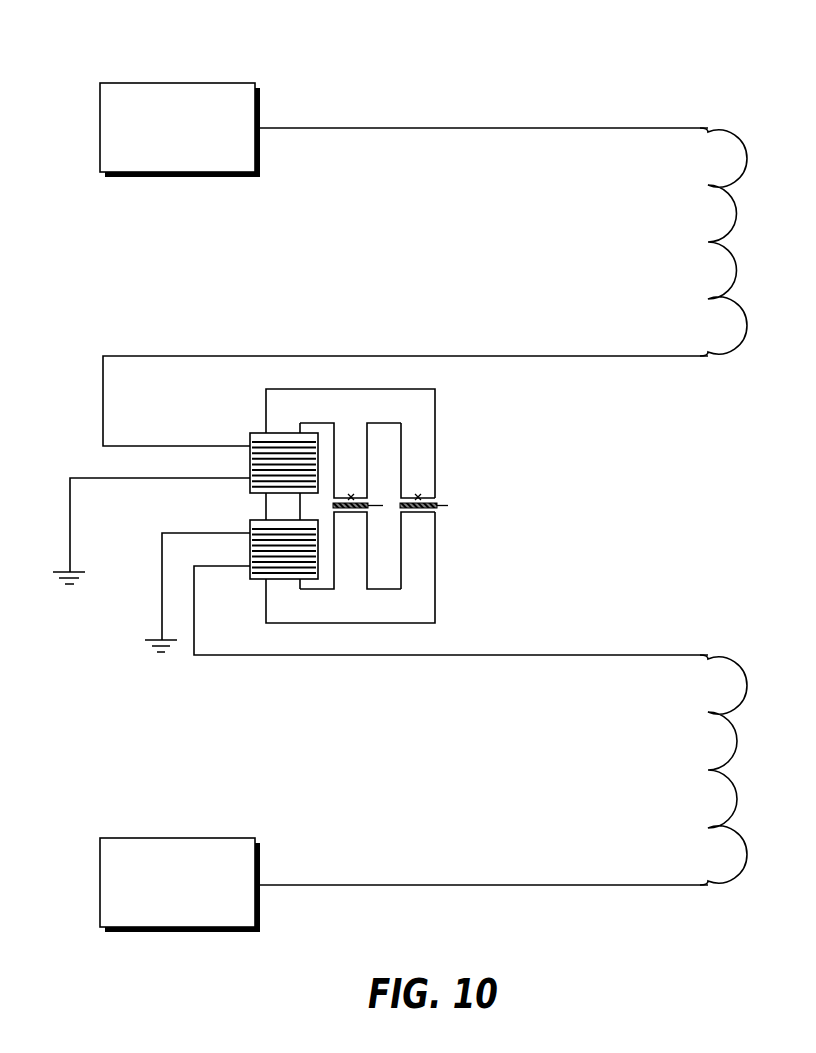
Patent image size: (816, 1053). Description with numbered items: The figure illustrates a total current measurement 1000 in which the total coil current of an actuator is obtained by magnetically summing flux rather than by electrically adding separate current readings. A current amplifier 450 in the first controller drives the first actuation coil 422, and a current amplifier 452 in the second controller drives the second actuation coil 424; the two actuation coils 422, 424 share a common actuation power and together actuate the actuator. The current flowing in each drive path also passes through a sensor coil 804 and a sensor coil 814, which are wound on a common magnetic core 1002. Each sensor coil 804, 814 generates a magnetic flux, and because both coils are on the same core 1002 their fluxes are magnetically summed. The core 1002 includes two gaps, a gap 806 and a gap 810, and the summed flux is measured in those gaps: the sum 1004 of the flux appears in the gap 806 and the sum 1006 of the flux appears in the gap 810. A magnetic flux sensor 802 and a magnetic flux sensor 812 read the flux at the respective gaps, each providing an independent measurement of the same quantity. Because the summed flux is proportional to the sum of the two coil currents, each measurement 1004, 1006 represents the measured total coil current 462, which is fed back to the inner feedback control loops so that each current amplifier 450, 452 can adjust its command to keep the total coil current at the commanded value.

The total current measurement 1000 is at (525, 34).
The current amplifier 450 is at (100, 100).
The current amplifier 452 is at (100, 856).
The actuation coil 1 422 is at (717, 140).
The actuation coil 2 424 is at (717, 675).
The core 1002 is at (388, 623).
The sensor coil 804 is at (249, 458).
The sensor coil 814 is at (249, 553).
The magnetic flux sensor 812 is at (351, 497).
The gap 810 is at (368, 512).
The magnetic flux sensor 802 is at (418, 497).
The gap 806 is at (437, 511).
The measured total coil current 462 is at (494, 457).
The sum of magnetic flux 1006 is at (383, 505).
The sum of magnetic flux 1004 is at (448, 505).